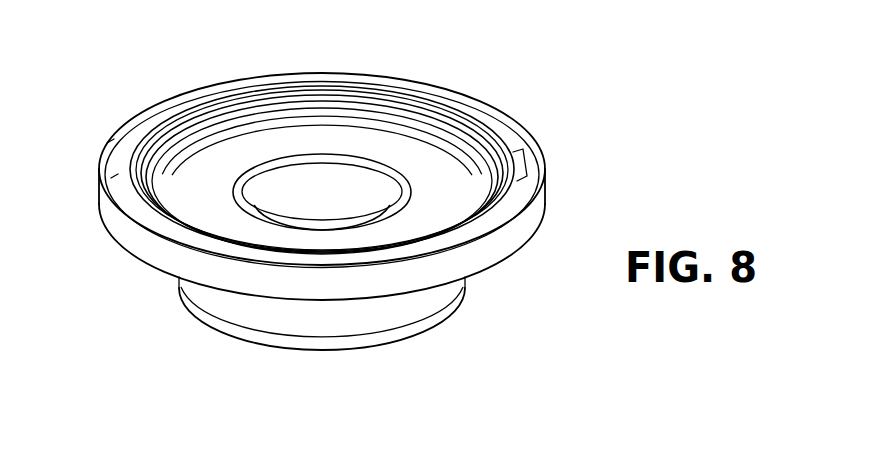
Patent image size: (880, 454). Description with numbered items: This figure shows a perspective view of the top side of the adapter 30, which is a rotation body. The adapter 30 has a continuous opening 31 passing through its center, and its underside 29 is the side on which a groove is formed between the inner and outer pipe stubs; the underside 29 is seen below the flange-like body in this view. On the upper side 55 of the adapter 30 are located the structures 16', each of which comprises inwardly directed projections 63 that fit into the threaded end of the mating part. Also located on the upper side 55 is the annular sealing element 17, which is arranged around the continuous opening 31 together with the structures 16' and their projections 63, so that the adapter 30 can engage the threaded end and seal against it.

The adapter 30 is at (575, 105).
The underside 29 is at (493, 270).
The continuous opening 31 is at (340, 185).
The annular sealing element 17 is at (498, 133).
The structures 16' is at (279, 128).
The inwardly directed projections 63 is at (134, 138).
The upper side 55 is at (290, 129).